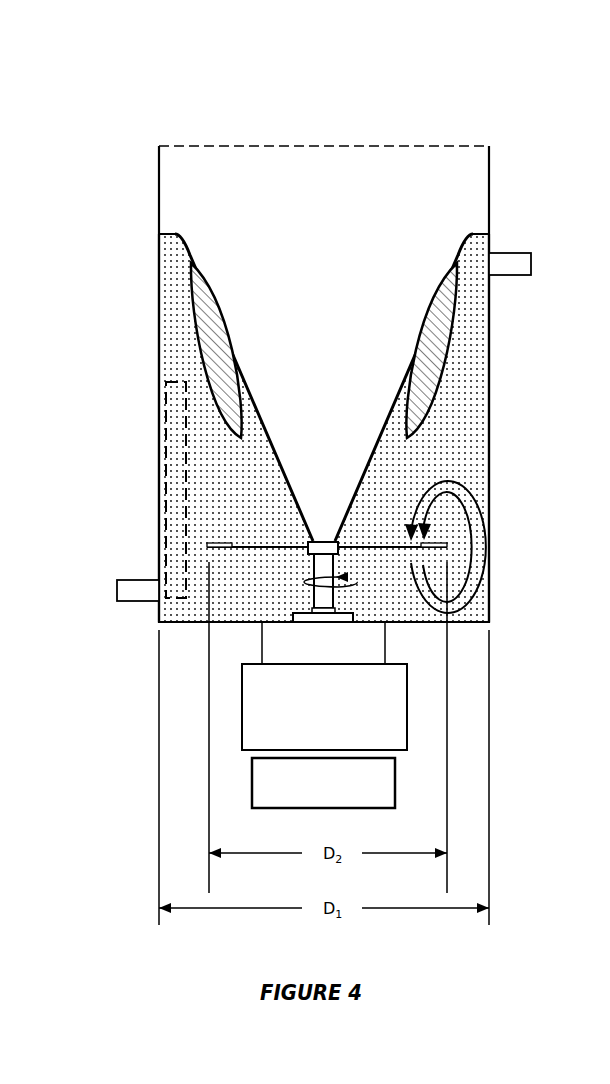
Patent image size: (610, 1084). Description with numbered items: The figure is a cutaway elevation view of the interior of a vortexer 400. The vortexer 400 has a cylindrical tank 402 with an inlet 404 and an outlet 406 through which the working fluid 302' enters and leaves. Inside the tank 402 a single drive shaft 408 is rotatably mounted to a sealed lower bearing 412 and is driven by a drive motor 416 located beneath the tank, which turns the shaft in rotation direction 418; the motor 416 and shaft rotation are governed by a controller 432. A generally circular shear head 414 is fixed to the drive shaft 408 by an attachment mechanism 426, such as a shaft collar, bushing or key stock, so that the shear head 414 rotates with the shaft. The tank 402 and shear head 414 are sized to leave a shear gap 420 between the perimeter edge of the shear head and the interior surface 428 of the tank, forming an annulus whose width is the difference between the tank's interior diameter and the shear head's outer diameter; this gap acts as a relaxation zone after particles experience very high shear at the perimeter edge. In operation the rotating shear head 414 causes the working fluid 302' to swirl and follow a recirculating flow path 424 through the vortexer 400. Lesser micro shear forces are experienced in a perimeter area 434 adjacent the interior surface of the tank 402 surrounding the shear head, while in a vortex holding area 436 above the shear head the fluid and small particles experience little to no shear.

The vortexer 400 is at (152, 147).
The working fluid 302' is at (288, 428).
The cylindrical tank 402 is at (159, 420).
The inlet 404 is at (117, 601).
The outlet 406 is at (521, 254).
The drive shaft 408 is at (338, 600).
The sealed lower bearing 412 is at (300, 613).
The shear head 414 is at (292, 546).
The drive motor 416 is at (407, 750).
The rotation direction 418 is at (345, 580).
The shear gap 420 is at (216, 827).
The recirculating flow path 424 is at (470, 488).
The attachment mechanism 426 is at (313, 541).
The interior surface 428 is at (484, 366).
The controller 432 is at (380, 808).
The perimeter area 434 is at (165, 500).
The vortex holding area 436 is at (241, 385).